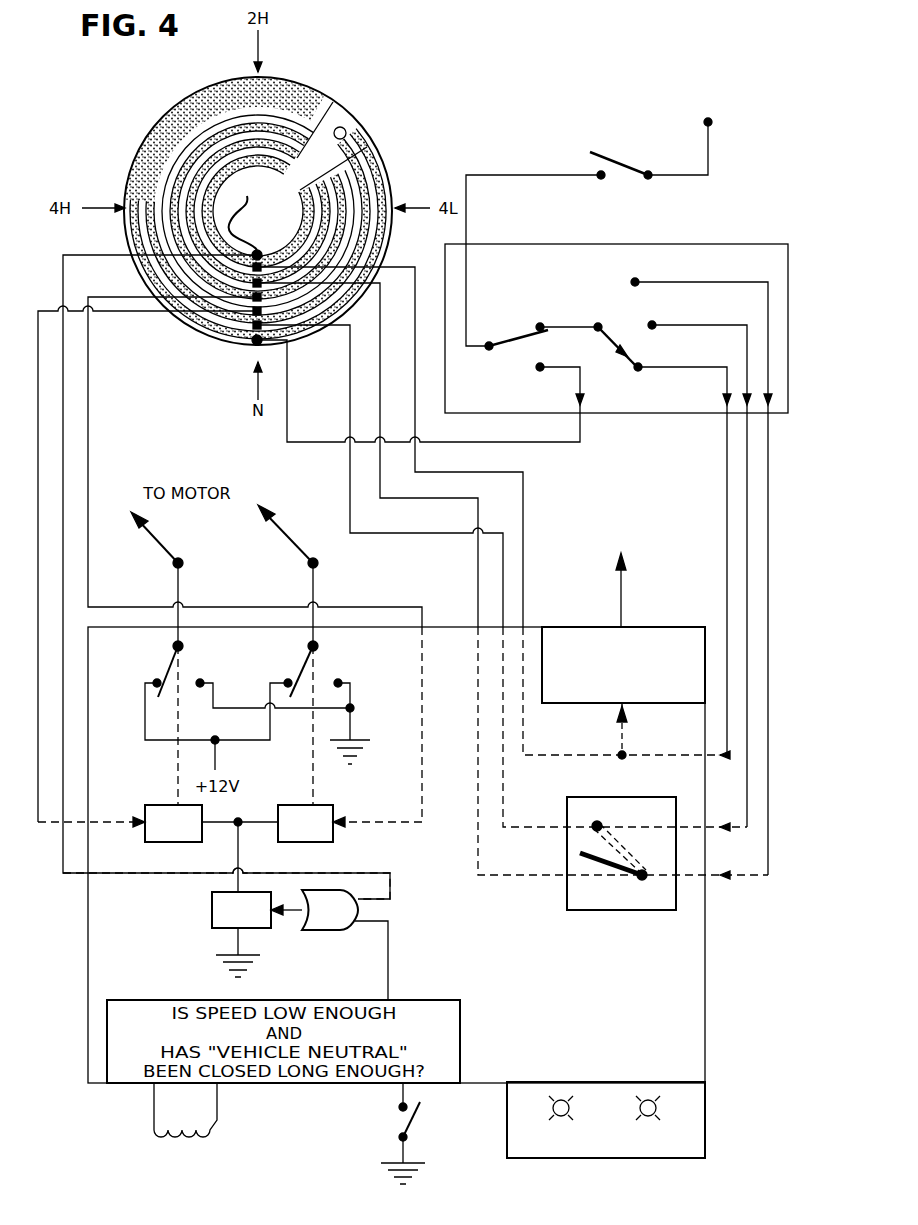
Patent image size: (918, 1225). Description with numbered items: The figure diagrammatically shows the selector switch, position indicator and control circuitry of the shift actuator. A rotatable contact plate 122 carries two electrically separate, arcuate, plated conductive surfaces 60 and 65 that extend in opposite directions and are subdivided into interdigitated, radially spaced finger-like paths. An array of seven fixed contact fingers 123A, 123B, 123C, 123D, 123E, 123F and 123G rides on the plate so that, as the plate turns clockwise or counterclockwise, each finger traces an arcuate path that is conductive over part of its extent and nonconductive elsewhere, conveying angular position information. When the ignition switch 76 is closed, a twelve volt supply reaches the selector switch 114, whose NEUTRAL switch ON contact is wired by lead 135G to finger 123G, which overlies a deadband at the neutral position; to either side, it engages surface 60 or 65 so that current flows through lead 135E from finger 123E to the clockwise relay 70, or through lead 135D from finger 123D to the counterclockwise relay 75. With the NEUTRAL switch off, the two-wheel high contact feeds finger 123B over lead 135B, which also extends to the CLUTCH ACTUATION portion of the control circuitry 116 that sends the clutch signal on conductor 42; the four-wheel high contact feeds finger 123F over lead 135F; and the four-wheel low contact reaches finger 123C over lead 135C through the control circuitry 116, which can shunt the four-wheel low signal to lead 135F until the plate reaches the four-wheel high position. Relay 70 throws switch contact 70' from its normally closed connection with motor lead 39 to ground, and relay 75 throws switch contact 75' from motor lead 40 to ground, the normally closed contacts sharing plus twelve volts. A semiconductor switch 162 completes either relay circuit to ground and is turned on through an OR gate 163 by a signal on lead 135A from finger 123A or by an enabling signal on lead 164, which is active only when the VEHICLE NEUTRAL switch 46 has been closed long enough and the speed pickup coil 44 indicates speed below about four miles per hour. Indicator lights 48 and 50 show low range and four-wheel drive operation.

The contact plate 122 is at (277, 201).
The conductive surface 60 is at (178, 118).
The conductive surface 65 is at (350, 170).
The contact finger 123A is at (235, 210).
The contact finger 123B is at (256, 228).
The contact finger 123C is at (262, 278).
The contact finger 123D is at (262, 297).
The contact finger 123E is at (253, 311).
The contact finger 123F is at (253, 325).
The contact finger 123G is at (257, 342).
The lead 135A is at (108, 253).
The conductive lead 135B is at (430, 250).
The lead 135C is at (383, 395).
The conductive lead 135D is at (63, 440).
The conductive lead 135E is at (38, 432).
The conductive lead 135F is at (350, 384).
The lead 135G is at (287, 440).
The ignition switch 76 is at (650, 130).
The selector switch 114 is at (715, 235).
The control circuitry 116 is at (85, 1065).
The motor lead 39 is at (165, 545).
The motor lead 40 is at (290, 542).
The switch contact 70' is at (184, 691).
The switch contact 75' is at (329, 686).
The clockwise relay 70 is at (157, 807).
The counterclockwise relay 75 is at (334, 807).
The semiconductor switch 162 is at (212, 910).
The OR gate 163 is at (318, 943).
The lead 164 is at (388, 950).
The speed pickup coil 44 is at (217, 1122).
The VEHICLE NEUTRAL switch 46 is at (415, 1118).
The conductor 42 is at (621, 600).
The indicator light 48 is at (561, 1100).
The indicator light 50 is at (648, 1100).